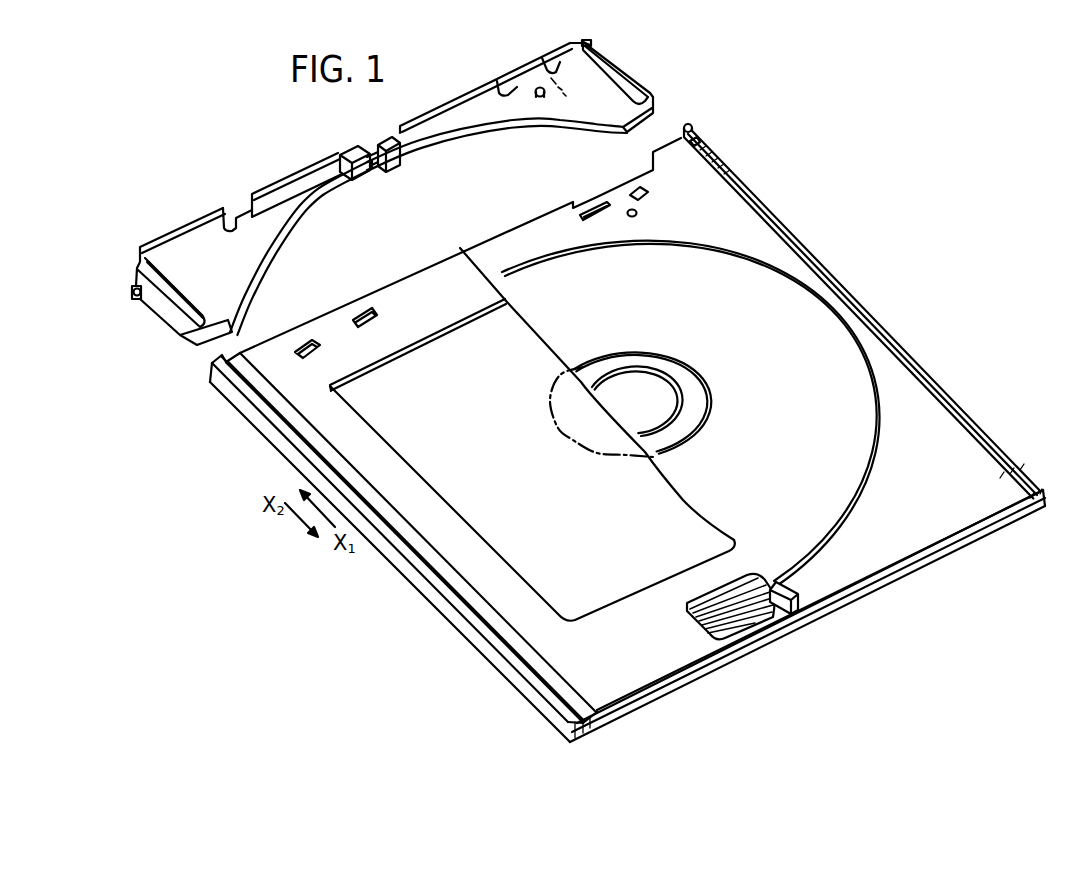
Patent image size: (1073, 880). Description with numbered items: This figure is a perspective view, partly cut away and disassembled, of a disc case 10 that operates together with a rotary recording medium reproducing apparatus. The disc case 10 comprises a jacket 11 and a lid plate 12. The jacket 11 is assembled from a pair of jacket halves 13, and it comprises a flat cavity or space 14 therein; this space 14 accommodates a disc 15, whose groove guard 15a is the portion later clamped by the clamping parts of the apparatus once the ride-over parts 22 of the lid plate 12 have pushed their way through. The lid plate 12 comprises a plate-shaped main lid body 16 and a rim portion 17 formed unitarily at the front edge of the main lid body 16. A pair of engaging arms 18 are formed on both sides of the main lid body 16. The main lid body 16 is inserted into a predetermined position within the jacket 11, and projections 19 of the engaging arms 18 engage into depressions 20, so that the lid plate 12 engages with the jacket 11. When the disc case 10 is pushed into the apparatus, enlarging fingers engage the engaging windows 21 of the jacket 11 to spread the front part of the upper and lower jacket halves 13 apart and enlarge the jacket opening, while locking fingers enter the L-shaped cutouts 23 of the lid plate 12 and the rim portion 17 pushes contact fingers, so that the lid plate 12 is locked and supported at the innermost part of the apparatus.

The disc case 10 is at (734, 141).
The jacket 11 is at (424, 600).
The lid plate 12 is at (287, 178).
The jacket halves 13 is at (940, 557).
The flat cavity or space 14 is at (938, 413).
The disc 15 is at (862, 430).
The groove guard 15a is at (862, 487).
The main lid body 16 is at (498, 122).
The rim portion 17 is at (414, 115).
The engaging arms 18 is at (158, 317).
The projections 19 is at (134, 295).
The depressions 20 is at (696, 147).
The engaging windows 21 is at (360, 312).
The ride-over parts 22 is at (350, 155).
The L-shaped cutouts 23 is at (238, 215).